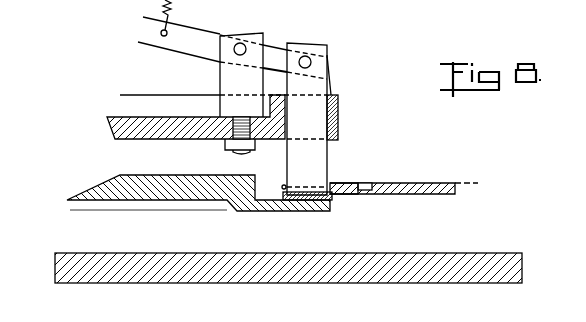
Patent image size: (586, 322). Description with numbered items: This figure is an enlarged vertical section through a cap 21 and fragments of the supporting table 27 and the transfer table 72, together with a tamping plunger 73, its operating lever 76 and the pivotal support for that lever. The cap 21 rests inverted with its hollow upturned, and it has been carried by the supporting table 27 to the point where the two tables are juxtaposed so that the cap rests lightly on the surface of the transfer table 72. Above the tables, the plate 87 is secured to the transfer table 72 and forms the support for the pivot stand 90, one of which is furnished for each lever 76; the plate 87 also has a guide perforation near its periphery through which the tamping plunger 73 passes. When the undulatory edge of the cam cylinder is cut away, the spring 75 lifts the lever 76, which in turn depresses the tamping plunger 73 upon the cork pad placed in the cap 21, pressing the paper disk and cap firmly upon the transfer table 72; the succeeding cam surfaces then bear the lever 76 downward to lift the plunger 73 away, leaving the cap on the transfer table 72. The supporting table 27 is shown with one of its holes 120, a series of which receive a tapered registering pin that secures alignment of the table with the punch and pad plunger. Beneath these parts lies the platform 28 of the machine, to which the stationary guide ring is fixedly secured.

The spring 75 is at (174, 12).
The lever 76 is at (192, 48).
The pivot stand 90 is at (228, 78).
The tamping plunger 73 is at (327, 161).
The plate 87 is at (338, 135).
The transfer table 72 is at (300, 211).
The supporting table 27 is at (453, 192).
The cap 21 is at (336, 187).
The hole 120 is at (366, 189).
The platform 28 is at (343, 273).